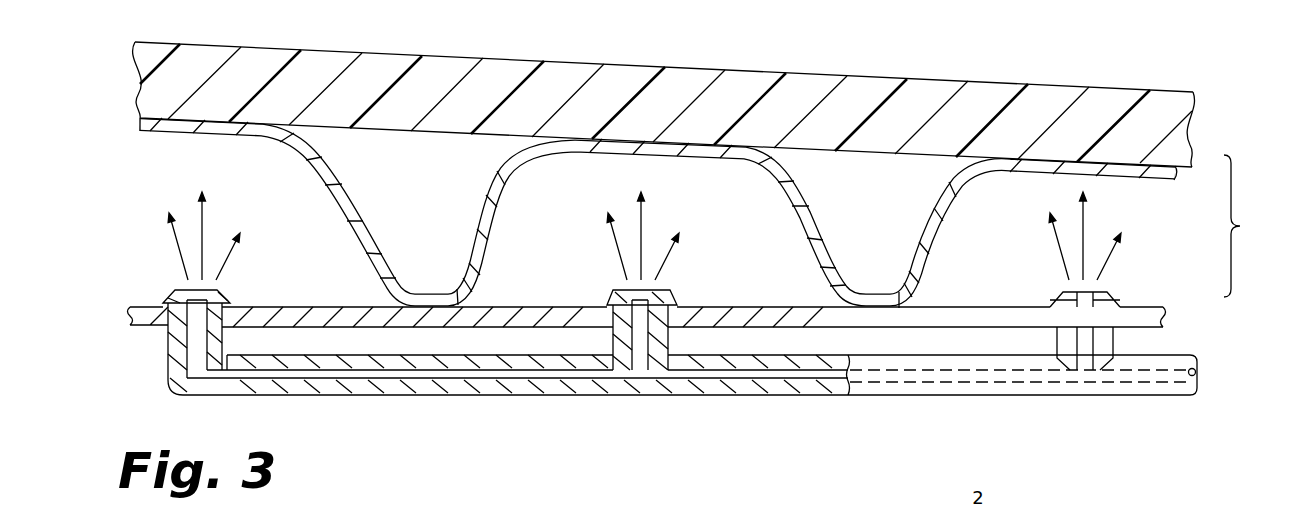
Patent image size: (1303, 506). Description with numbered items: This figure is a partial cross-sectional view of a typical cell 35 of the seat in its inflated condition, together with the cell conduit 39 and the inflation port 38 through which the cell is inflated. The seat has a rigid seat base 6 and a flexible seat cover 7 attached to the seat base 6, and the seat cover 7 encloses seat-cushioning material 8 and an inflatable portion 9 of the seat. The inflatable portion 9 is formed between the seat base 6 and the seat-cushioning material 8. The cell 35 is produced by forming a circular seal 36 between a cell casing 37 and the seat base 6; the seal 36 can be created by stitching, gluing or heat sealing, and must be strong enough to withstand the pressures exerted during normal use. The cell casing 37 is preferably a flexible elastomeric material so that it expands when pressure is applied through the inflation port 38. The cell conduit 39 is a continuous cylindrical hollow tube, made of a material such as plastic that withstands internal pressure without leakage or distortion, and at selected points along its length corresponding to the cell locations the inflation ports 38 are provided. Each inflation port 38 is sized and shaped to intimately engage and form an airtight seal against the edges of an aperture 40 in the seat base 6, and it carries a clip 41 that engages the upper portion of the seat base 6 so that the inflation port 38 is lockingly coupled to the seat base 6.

The seat base 6 is at (828, 318).
The seat cover 7 is at (487, 58).
The seat-cushioning material 8 is at (567, 85).
The inflatable portion 9 is at (1244, 226).
The cell 35 is at (568, 262).
The circular seal 36 is at (450, 302).
The cell casing 37 is at (810, 230).
The inflation port 38 is at (660, 340).
The cell conduit 39 is at (567, 395).
The aperture 40 is at (613, 310).
The clip 41 is at (663, 302).